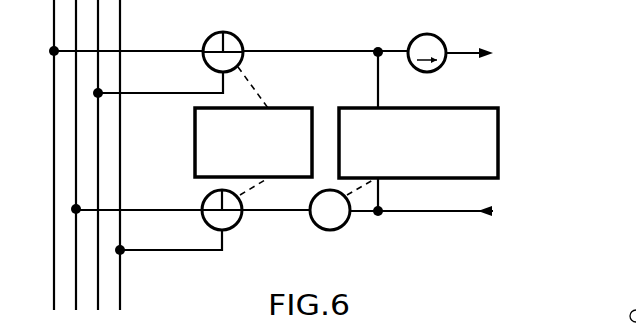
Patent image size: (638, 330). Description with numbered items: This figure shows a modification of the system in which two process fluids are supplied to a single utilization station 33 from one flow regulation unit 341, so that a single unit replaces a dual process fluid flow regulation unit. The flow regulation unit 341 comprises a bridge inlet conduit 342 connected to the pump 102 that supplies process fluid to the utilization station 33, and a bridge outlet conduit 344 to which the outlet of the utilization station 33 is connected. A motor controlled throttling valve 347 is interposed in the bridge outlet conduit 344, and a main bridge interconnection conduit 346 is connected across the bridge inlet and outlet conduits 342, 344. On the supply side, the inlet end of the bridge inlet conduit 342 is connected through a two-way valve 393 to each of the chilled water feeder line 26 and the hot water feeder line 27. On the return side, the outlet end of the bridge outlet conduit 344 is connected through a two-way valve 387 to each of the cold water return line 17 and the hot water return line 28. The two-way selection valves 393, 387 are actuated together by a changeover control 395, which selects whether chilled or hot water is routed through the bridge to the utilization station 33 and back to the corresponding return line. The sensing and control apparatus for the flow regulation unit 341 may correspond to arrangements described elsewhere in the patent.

The chilled water feeder line 26 is at (54, 99).
The cold water return line 17 is at (76, 175).
The hot water feeder line 27 is at (98, 237).
The hot water return line 28 is at (120, 288).
The bridge inlet conduit 342 is at (318, 51).
The two-way valve 393 is at (238, 36).
The changeover control 395 is at (195, 150).
The flow regulation unit 341 is at (342, 103).
The utilization station 33 is at (532, 159).
The main bridge interconnection conduit 346 is at (378, 90).
The pump 102 is at (446, 43).
The two-way valve 387 is at (234, 226).
The bridge outlet conduit 344 is at (380, 216).
The motor controlled throttling valve 347 is at (330, 230).